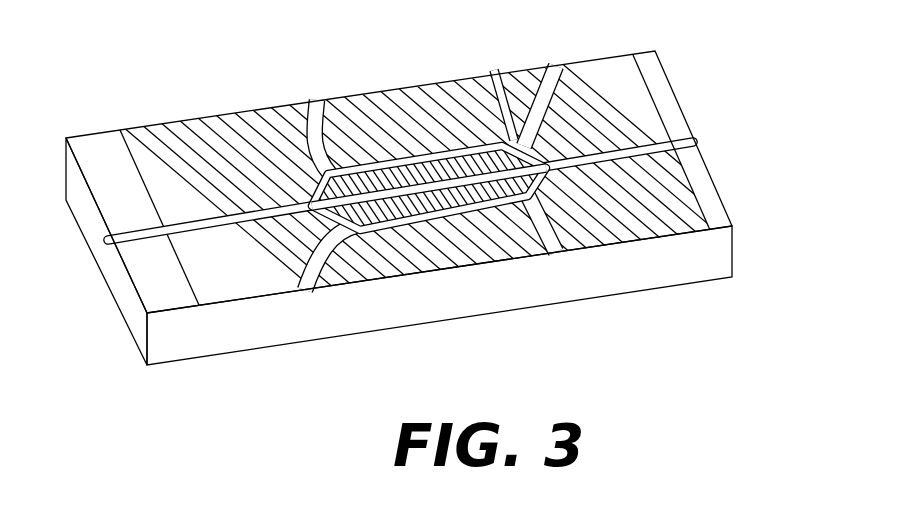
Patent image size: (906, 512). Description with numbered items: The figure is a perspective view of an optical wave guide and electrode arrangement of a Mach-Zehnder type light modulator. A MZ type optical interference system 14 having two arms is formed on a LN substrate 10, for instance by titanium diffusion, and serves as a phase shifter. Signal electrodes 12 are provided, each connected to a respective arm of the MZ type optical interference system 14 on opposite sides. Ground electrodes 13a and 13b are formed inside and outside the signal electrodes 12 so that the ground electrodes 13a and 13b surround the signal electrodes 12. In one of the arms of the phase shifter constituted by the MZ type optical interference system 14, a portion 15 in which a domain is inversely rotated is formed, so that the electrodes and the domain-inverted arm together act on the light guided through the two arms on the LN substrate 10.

The LN substrate 10 is at (613, 277).
The signal electrodes 12 is at (522, 78).
The ground electrode 13a is at (488, 238).
The ground electrode 13b is at (622, 193).
The MZ type optical interference system 14 is at (132, 228).
The portion in which a domain is inversely rotated 15 is at (408, 160).